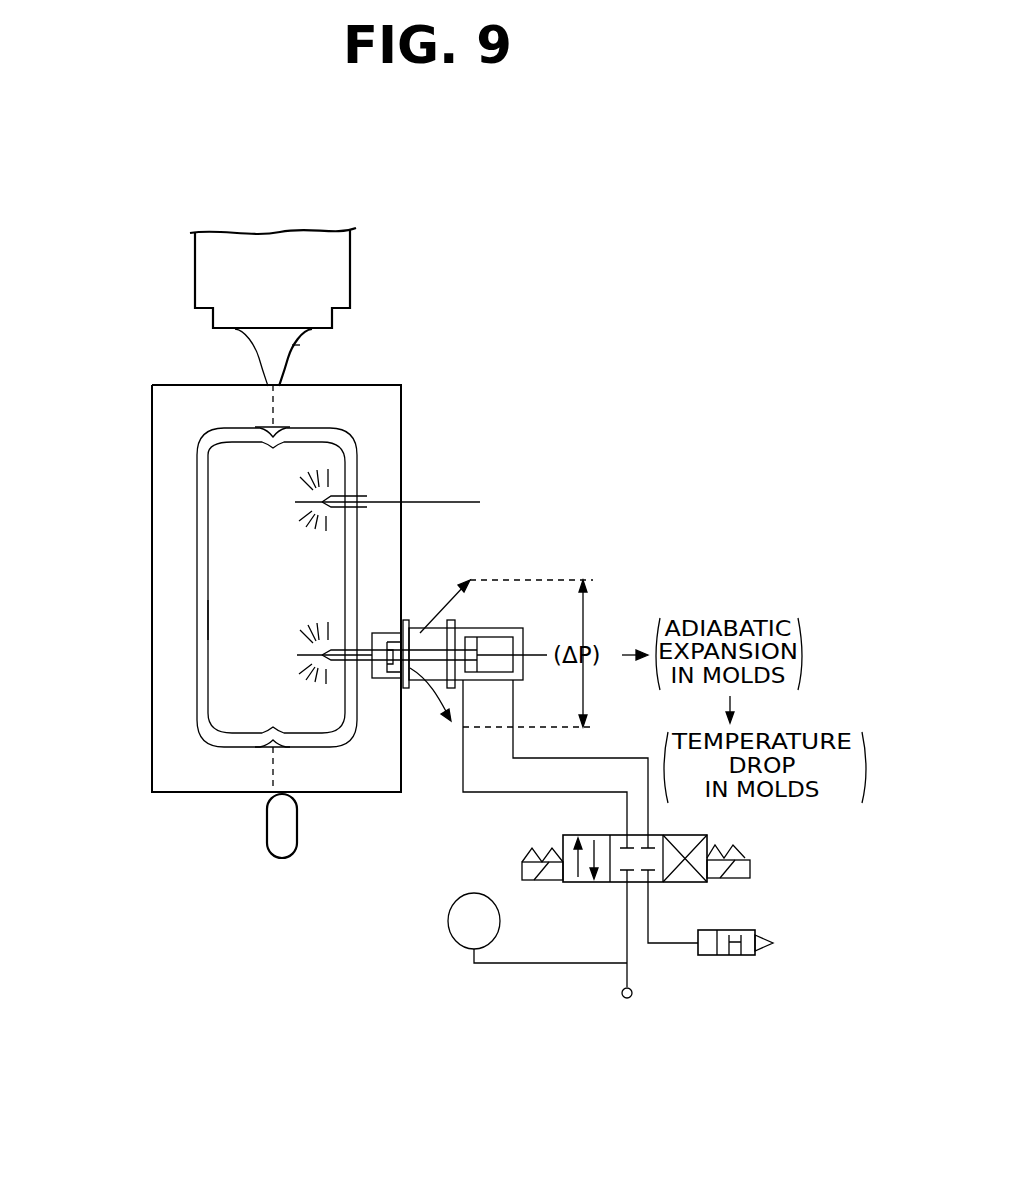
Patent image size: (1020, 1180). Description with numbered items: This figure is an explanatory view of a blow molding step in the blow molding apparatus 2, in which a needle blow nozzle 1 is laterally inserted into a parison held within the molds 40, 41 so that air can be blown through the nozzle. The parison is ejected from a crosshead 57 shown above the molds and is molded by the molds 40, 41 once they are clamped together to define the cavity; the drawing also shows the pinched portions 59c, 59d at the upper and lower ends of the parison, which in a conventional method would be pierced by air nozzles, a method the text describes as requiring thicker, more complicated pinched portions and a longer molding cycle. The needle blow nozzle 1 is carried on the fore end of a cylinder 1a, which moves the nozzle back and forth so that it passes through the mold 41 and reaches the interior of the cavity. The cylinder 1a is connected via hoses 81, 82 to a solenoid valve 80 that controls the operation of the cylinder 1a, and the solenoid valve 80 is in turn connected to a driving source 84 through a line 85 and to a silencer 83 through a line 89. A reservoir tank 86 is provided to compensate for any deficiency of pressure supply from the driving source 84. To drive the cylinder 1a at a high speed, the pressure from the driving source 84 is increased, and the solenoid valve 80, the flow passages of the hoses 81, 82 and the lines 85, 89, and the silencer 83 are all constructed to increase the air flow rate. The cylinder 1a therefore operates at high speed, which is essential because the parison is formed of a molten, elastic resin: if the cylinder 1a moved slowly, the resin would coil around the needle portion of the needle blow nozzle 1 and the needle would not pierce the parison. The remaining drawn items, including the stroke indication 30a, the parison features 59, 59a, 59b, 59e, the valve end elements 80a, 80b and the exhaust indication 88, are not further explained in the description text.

The needle blow nozzle 1 is at (386, 626).
The cylinder 1a is at (505, 635).
The blow molding apparatus 2 is at (448, 432).
The pressure difference stroke 30a is at (596, 632).
The mold 40 is at (186, 386).
The mold 41 is at (360, 393).
The crosshead 57 is at (337, 258).
The molded article (preform) 59 is at (197, 548).
The sprue / gate portion 59a is at (310, 345).
The bottom projection 59b is at (300, 826).
The pinched portion 59c is at (258, 429).
The pinched portion 59d is at (255, 748).
The side wall of article 59e is at (235, 636).
The solenoid valve 80 is at (707, 836).
The solenoid 80a is at (750, 870).
The solenoid 80b is at (522, 872).
The hose 81 is at (463, 774).
The hose 82 is at (585, 758).
The silencer 83 is at (738, 957).
The driving source 84 is at (627, 999).
The line 85 is at (627, 935).
The reservoir tank 86 is at (449, 937).
The exhaust flow 88 is at (687, 987).
The line 89 is at (670, 938).